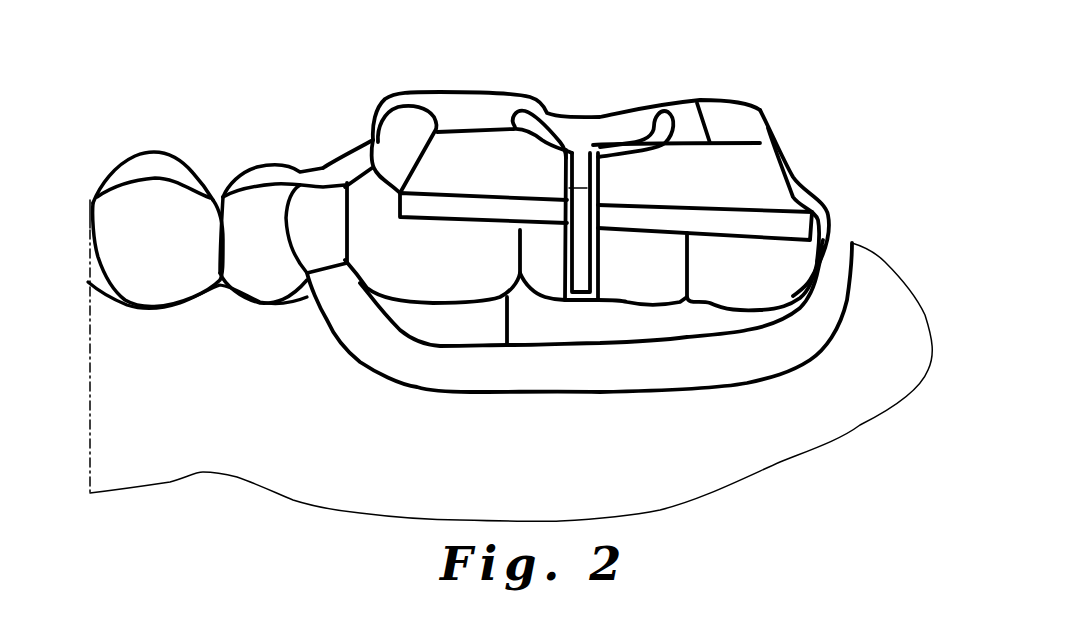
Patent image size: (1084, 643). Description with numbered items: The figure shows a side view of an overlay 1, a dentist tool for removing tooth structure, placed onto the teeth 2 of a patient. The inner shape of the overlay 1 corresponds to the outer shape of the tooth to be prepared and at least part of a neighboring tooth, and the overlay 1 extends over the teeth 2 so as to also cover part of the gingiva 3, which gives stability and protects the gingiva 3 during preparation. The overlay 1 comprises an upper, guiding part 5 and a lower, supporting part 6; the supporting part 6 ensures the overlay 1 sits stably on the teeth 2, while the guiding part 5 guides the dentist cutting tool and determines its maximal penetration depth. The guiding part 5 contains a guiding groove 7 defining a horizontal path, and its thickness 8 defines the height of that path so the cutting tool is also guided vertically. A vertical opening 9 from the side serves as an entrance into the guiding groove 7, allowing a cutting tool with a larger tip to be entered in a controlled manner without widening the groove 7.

The overlay 1 is at (748, 85).
The teeth 2 is at (130, 137).
The gingiva 3 is at (234, 421).
The guiding part 5 is at (843, 107).
The supporting part 6 is at (843, 215).
The guiding groove 7 is at (647, 147).
The thickness of the guiding part 8 is at (578, 222).
The vertical opening 9 is at (563, 237).